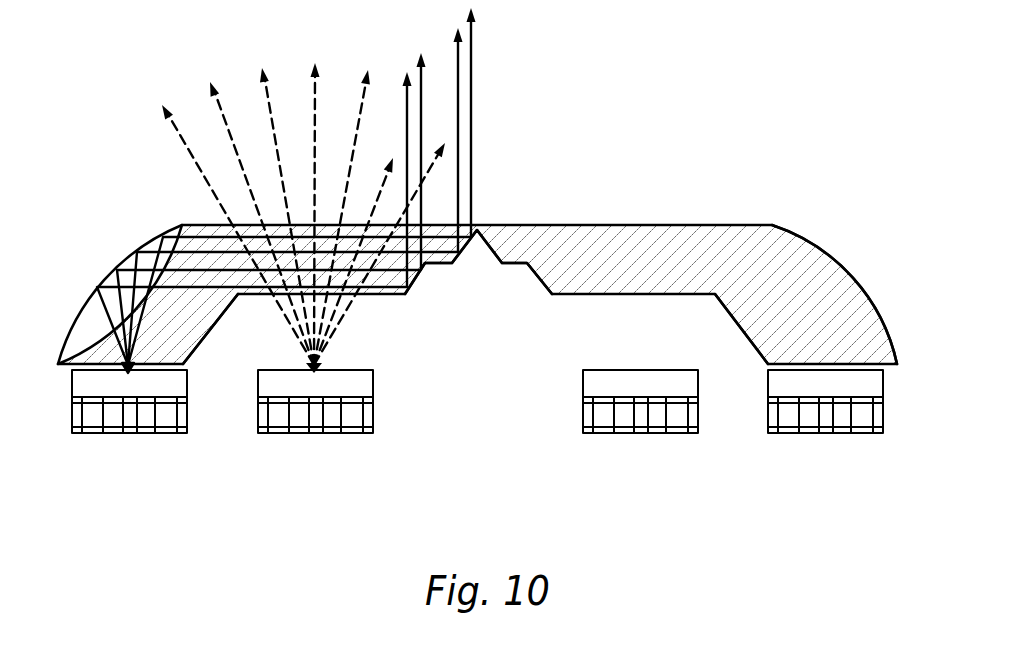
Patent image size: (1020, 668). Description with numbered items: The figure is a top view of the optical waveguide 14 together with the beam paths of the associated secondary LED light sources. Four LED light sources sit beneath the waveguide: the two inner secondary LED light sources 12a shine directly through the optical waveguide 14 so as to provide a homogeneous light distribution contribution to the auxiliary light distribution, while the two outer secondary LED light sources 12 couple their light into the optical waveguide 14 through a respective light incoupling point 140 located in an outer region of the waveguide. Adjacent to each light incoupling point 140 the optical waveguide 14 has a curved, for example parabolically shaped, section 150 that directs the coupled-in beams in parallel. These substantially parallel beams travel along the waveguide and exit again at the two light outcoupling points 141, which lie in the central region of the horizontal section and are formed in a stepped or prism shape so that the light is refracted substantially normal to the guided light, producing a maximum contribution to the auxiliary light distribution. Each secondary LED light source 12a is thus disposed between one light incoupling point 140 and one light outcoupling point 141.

The secondary LED light source 12 is at (112, 417).
The secondary LED light source 12a is at (332, 417).
The optical waveguide 14 is at (687, 237).
The light incoupling point 140 is at (178, 354).
The light outcoupling point 141 is at (437, 276).
The curved section 150 is at (118, 250).